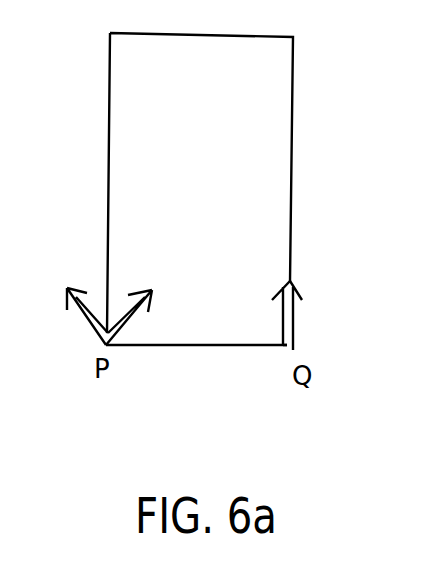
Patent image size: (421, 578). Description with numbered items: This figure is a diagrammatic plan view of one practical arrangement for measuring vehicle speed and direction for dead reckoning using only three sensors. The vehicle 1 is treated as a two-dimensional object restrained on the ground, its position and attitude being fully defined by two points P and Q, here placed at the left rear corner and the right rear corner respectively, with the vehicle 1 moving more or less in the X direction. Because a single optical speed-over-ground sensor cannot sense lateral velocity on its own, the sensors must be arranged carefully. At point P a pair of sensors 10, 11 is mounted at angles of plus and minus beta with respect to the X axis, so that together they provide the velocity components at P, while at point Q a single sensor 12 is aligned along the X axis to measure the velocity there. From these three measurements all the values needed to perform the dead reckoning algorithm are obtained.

The vehicle 1 is at (293, 117).
The sensor 10 is at (85, 313).
The sensor 11 is at (132, 320).
The sensor 12 is at (293, 312).